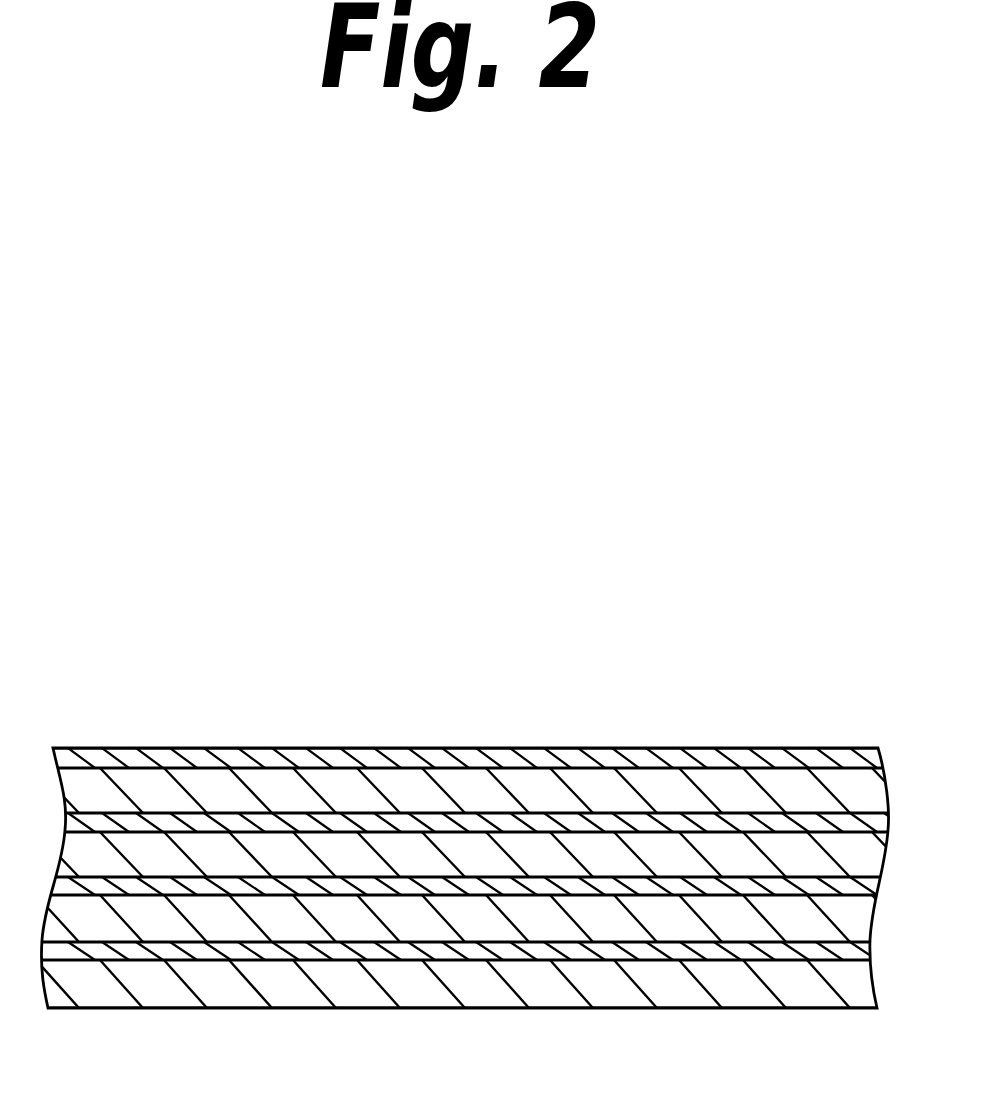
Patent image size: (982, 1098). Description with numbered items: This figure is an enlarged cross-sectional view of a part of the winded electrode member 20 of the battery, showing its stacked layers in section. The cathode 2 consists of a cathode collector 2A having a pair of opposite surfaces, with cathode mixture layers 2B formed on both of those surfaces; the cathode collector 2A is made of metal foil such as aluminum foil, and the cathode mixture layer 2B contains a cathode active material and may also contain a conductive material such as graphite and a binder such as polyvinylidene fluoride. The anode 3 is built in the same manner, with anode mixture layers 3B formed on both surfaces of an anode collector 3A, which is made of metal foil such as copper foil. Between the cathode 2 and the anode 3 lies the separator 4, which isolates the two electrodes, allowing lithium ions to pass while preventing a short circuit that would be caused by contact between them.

The winded electrode member 20 is at (786, 348).
The cathode 2 is at (357, 608).
The cathode collector 2A is at (142, 815).
The cathode mixture layer 2B is at (275, 853).
The anode 3 is at (685, 610).
The anode collector 3A is at (458, 947).
The anode mixture layer 3B is at (598, 985).
The separator 4 is at (750, 893).